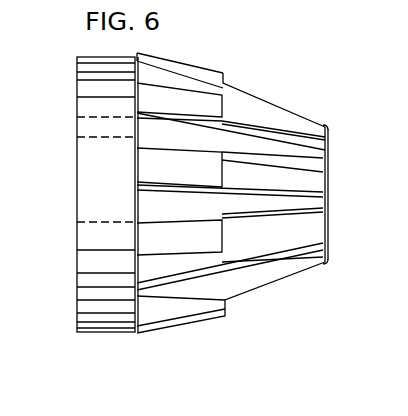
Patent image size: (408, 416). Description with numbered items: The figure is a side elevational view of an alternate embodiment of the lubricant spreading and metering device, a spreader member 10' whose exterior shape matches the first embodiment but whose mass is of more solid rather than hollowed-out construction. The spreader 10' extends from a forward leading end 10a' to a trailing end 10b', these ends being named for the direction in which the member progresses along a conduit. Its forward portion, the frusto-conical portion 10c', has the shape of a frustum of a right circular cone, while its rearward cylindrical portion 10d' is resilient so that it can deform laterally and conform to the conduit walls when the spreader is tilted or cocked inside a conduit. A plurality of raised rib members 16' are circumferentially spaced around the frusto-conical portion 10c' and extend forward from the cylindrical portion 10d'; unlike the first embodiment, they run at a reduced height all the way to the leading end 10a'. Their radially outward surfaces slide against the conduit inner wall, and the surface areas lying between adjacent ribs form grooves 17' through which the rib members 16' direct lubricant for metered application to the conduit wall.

The spreader member 10' is at (231, 195).
The leading end 10a' is at (352, 193).
The trailing end 10b' is at (80, 194).
The frusto-conical portion 10c' is at (233, 339).
The cylindrical portion 10d' is at (107, 377).
The rib members 16' is at (188, 53).
The grooves 17' is at (205, 191).